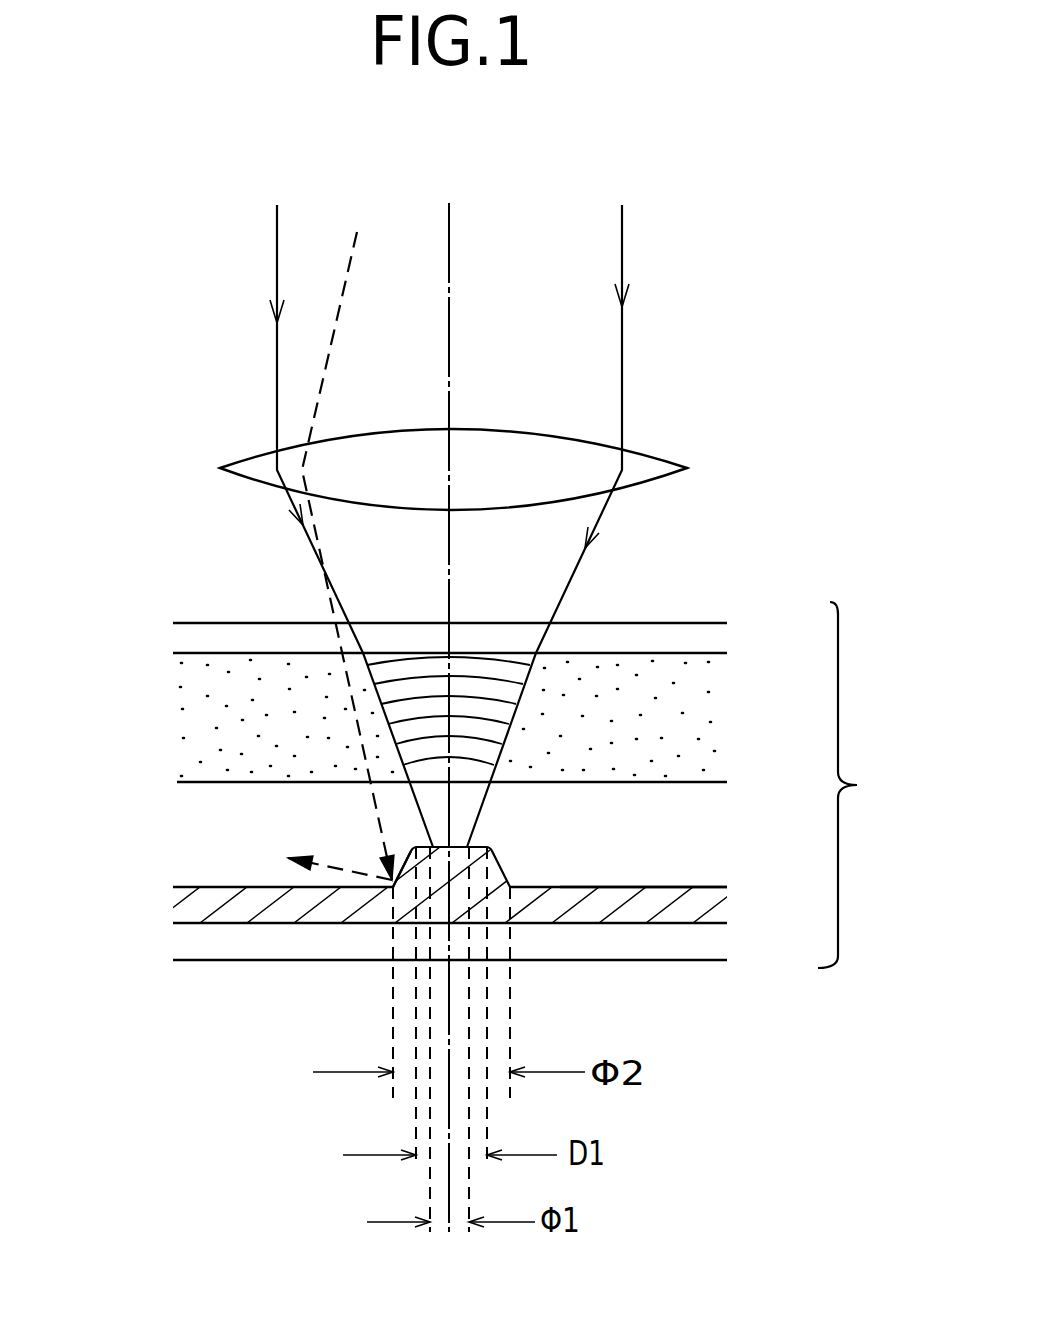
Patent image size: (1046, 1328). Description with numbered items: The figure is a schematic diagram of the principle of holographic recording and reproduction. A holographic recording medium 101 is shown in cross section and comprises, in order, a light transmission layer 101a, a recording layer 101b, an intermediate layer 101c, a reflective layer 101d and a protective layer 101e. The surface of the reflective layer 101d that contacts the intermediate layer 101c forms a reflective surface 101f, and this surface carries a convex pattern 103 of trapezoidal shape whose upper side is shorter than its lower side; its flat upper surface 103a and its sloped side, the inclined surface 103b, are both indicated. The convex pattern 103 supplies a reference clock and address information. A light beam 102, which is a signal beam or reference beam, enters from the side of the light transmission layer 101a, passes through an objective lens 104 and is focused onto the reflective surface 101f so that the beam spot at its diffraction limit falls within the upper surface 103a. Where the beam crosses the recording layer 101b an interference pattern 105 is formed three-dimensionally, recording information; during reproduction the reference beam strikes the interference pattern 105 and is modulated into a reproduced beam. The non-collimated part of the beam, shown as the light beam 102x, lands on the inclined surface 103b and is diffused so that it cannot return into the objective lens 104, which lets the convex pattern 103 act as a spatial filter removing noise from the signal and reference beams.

The holographic recording medium 101 is at (865, 785).
The light transmission layer 101a is at (187, 642).
The recording layer 101b is at (187, 726).
The intermediate layer 101c is at (197, 836).
The reflective layer 101d is at (177, 907).
The protective layer 101e is at (193, 943).
The reflective surface 101f is at (695, 887).
The light beam 102 is at (617, 343).
The noise-causing light beam 102x is at (330, 594).
The convex pattern 103 is at (498, 864).
The upper surface 103a is at (436, 847).
The inclined surface 103b is at (405, 865).
The objective lens 104 is at (665, 450).
The interference pattern 105 is at (508, 662).